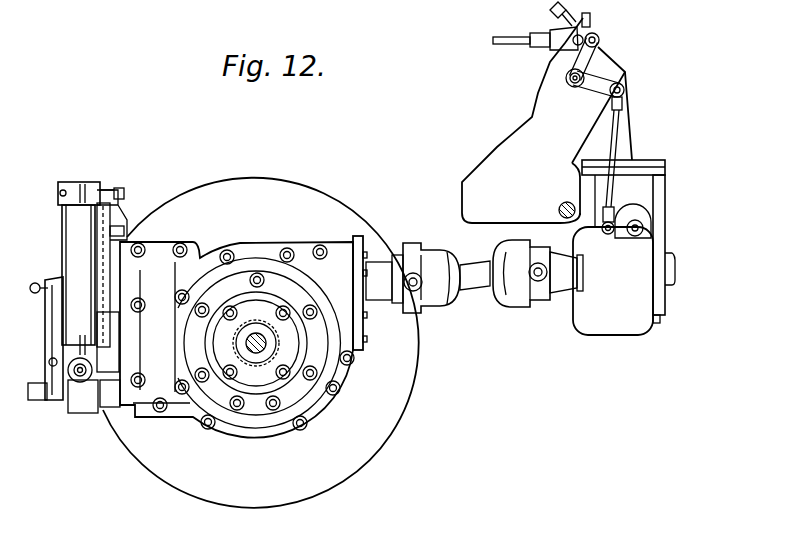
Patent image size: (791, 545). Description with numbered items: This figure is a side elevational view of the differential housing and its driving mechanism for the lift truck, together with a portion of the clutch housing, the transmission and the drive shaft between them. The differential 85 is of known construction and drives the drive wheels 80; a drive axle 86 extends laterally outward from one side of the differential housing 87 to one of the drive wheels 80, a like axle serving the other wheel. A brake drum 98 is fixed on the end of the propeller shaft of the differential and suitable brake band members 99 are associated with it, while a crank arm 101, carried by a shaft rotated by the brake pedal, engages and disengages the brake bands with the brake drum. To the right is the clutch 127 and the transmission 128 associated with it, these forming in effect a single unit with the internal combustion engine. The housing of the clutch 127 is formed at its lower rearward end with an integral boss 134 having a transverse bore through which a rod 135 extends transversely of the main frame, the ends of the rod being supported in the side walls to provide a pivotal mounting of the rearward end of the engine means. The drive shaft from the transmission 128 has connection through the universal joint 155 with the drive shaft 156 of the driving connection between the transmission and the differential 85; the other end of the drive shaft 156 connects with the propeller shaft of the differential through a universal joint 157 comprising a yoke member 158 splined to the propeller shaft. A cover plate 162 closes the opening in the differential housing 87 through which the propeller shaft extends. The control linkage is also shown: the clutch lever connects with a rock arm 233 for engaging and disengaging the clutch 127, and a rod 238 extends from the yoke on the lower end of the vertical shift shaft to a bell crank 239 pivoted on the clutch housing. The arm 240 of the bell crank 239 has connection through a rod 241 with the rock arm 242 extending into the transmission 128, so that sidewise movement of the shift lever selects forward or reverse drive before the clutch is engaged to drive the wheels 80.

The drive wheel 80 is at (203, 190).
The differential 85 is at (254, 236).
The drive axle 86 is at (263, 349).
The differential housing 87 is at (308, 248).
The brake drum 98 is at (63, 235).
The brake band members 99 is at (77, 222).
The crank arm 101 is at (55, 308).
The clutch 127 is at (535, 118).
The transmission 128 is at (636, 303).
The integral boss 134 is at (568, 197).
The rod 135 is at (558, 208).
The universal joint 155 is at (542, 283).
The drive shaft 156 is at (473, 266).
The universal joint 157 is at (425, 250).
The yoke member 158 is at (389, 265).
The cover plate 162 is at (356, 236).
The rock arm 233 is at (567, 55).
The rod 238 is at (548, 10).
The bell crank 239 is at (600, 45).
The arm 240 is at (597, 82).
The rod 241 is at (617, 128).
The rock arm 242 is at (628, 238).